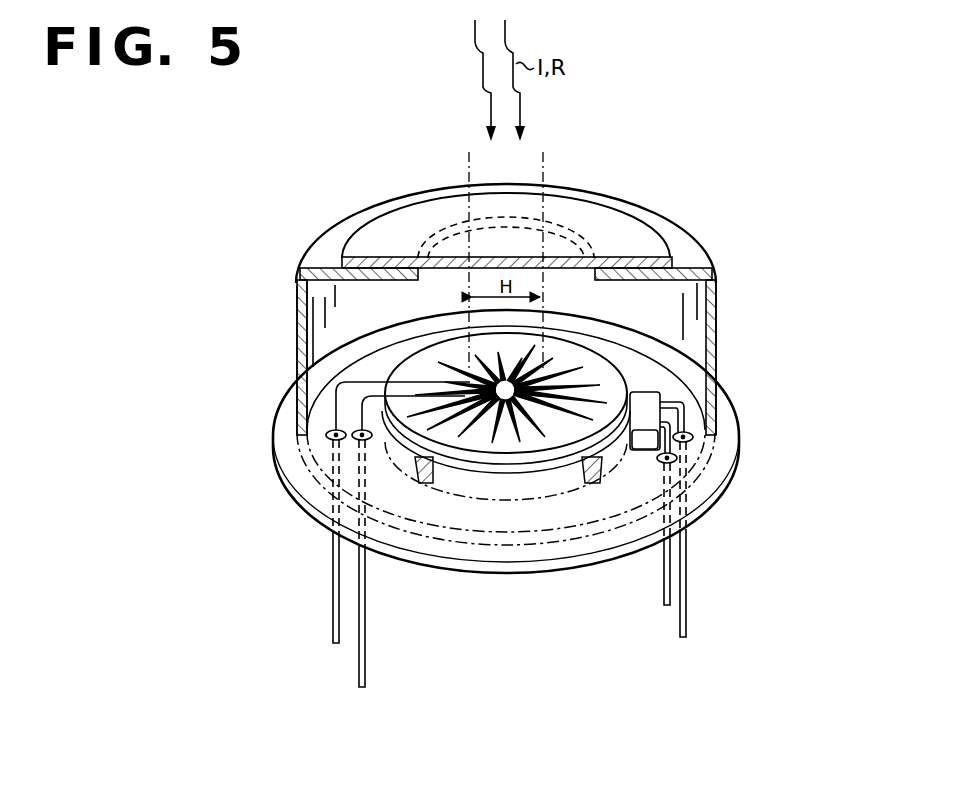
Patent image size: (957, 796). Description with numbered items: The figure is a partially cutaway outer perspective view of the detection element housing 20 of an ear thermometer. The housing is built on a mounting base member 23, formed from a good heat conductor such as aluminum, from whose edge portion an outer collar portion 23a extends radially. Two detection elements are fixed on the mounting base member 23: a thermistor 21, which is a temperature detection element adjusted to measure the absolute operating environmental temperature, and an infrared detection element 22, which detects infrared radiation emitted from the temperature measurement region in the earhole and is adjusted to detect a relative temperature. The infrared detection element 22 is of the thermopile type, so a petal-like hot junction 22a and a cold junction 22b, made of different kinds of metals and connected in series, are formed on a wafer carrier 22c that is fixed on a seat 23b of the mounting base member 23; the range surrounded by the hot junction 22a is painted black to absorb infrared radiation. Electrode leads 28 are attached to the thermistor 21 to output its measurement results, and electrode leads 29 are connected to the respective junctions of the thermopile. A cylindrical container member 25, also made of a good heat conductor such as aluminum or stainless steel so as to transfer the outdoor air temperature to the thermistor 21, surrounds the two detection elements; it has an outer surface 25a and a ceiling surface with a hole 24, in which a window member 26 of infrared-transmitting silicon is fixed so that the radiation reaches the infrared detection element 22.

The detection element housing 20 is at (733, 242).
The thermistor 21 is at (646, 396).
The infrared detection element 22 is at (498, 452).
The hot junction 22a is at (523, 415).
The cold junction 22b is at (517, 440).
The wafer carrier 22c is at (570, 443).
The mounting base member 23 is at (566, 512).
The outer collar portion 23a is at (738, 436).
The seat 23b is at (428, 485).
The hole 24 is at (566, 224).
The container member 25 is at (717, 296).
The outer surface 25a is at (300, 322).
The window member 26 is at (632, 264).
The electrode leads 28 is at (672, 585).
The electrode leads 29 is at (358, 624).